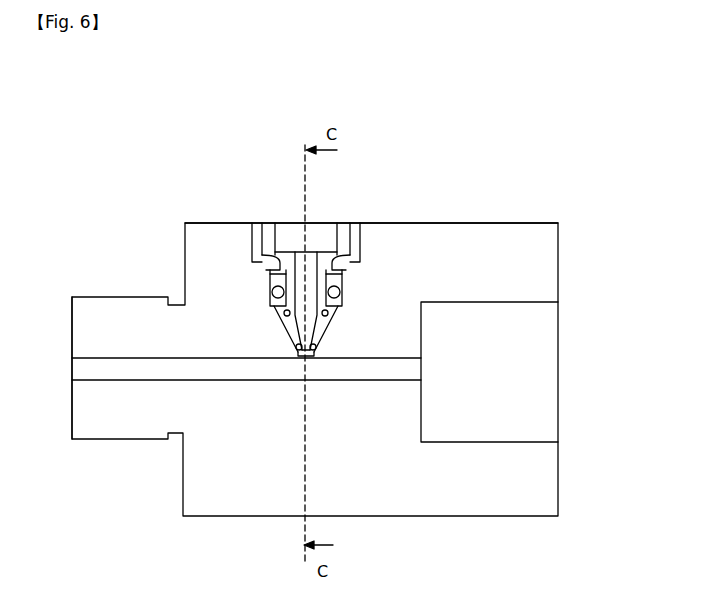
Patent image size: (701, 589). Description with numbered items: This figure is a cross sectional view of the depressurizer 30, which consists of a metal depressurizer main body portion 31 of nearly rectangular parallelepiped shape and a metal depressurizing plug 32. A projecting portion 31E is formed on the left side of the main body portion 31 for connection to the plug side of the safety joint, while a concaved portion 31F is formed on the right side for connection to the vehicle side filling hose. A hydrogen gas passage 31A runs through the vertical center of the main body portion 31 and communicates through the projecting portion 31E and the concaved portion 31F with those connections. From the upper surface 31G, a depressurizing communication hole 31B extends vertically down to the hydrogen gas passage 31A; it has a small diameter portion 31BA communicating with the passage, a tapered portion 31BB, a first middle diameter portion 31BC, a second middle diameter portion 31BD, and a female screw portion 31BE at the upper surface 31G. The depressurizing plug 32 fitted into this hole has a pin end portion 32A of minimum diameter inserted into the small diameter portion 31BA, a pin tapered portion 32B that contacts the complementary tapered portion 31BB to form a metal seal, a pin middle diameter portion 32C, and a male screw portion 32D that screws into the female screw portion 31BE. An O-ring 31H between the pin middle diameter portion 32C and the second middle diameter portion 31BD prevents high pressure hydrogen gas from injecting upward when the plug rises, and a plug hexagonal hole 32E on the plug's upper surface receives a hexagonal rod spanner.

The depressurizer 30 is at (484, 131).
The depressurizer main body portion 31 is at (522, 224).
The hydrogen gas passage 31A is at (212, 380).
The depressurizing communication hole 31B is at (296, 356).
The small diameter portion 31BA is at (317, 350).
The tapered portion 31BB is at (320, 329).
The first middle diameter portion 31BC is at (283, 315).
The second middle diameter portion 31BD is at (256, 259).
The female screw portion 31BE is at (261, 226).
The projecting portion 31E is at (90, 434).
The concaved portion 31F is at (525, 442).
The upper surface 31G is at (436, 224).
The O-ring 31H is at (342, 292).
The depressurizing plug 32 is at (348, 224).
The pin end portion 32A is at (307, 360).
The pin tapered portion 32B is at (288, 331).
The pin middle diameter portion 32C is at (318, 284).
The male screw portion 32D is at (366, 238).
The plug hexagonal hole 32E is at (288, 230).